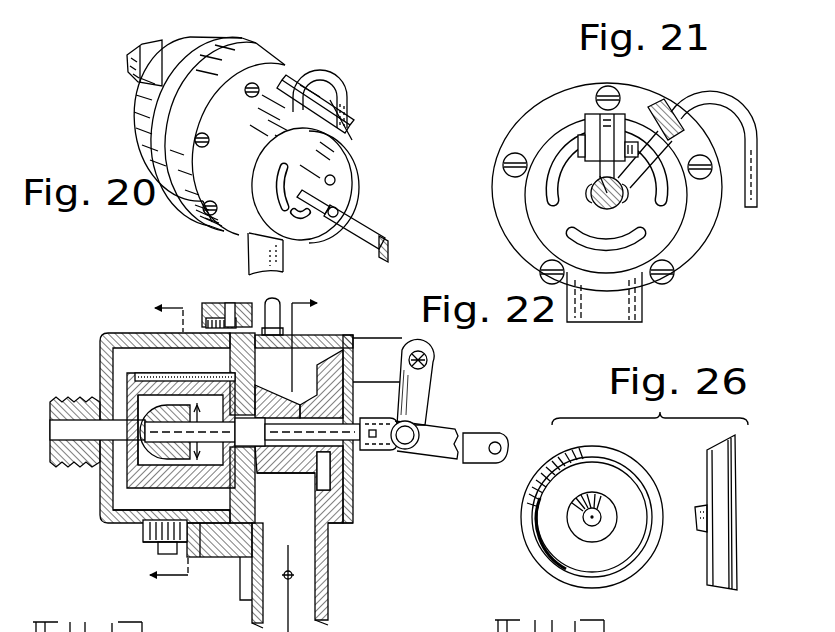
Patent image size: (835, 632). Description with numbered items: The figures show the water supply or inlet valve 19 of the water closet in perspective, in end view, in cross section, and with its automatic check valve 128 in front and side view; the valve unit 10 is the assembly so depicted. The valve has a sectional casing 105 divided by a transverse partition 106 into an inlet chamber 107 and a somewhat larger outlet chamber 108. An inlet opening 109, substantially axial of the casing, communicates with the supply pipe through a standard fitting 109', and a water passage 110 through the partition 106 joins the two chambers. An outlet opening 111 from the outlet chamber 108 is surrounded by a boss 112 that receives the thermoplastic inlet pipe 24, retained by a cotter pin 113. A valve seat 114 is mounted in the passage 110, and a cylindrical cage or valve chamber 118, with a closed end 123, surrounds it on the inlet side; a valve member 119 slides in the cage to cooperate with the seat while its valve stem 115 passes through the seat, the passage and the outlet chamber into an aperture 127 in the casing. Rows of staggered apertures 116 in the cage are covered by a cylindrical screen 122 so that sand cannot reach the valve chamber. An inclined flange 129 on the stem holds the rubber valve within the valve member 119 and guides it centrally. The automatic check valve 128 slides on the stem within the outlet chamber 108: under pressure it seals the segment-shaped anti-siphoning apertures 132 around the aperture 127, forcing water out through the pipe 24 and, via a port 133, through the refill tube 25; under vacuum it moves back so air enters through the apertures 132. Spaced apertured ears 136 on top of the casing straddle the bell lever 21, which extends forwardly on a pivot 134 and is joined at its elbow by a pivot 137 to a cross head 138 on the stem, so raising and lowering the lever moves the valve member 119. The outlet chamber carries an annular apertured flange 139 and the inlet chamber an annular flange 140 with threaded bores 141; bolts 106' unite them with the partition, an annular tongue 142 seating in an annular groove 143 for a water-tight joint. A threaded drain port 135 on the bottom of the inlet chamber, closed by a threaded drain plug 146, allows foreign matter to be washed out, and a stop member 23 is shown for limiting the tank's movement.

In FIG. 21, the valve unit 10 is at (660, 92).
In FIG. 20, the inlet valve 19 is at (284, 56).
In FIG. 21, the inlet valve 19 is at (512, 104).
In FIG. 22, the inlet valve 19 is at (131, 322).
In FIG. 20, the control lever 21 is at (382, 237).
In FIG. 21, the control lever 21 is at (617, 210).
In FIG. 22, the control lever 21 is at (485, 438).
In FIG. 22, the stop member 23 is at (172, 440).
In FIG. 20, the inlet pipe 24 is at (283, 262).
In FIG. 22, the inlet pipe 24 is at (342, 600).
In FIG. 20, the refill tube 25 is at (347, 95).
In FIG. 21, the refill tube 25 is at (735, 105).
In FIG. 22, the refill tube 25 is at (273, 297).
In FIG. 20, the sectional casing 105 is at (133, 108).
In FIG. 22, the sectional casing 105 is at (105, 340).
In FIG. 20, the transverse partition 106 is at (272, 129).
In FIG. 22, the transverse partition 106 is at (259, 428).
In FIG. 20, the bolts 106' is at (225, 167).
In FIG. 21, the bolts 106' is at (591, 196).
In FIG. 22, the inlet chamber 107 is at (120, 497).
In FIG. 22, the outlet chamber 108 is at (322, 350).
In FIG. 20, the inlet opening 109 is at (154, 50).
In FIG. 22, the inlet opening 109 is at (78, 423).
In FIG. 22, the standard fitting 109' is at (62, 420).
In FIG. 22, the water passage 110 is at (276, 410).
In FIG. 22, the outlet opening 111 is at (300, 520).
In FIG. 20, the boss 112 is at (294, 242).
In FIG. 22, the boss 112 is at (326, 570).
In FIG. 22, the cotter pin 113 is at (293, 575).
In FIG. 22, the valve seat 114 is at (282, 447).
In FIG. 20, the valve stem 115 is at (315, 175).
In FIG. 22, the valve stem 115 is at (290, 426).
In FIG. 22, the apertures 116 is at (158, 548).
In FIG. 22, the cage or valve chamber 118 is at (132, 462).
In FIG. 22, the valve member 119 is at (152, 403).
In FIG. 22, the cylindrical screen 122 is at (190, 374).
In FIG. 22, the closed end 123 is at (125, 395).
In FIG. 22, the aperture 127 is at (356, 418).
In FIG. 22, the automatic check valve 128 is at (332, 478).
In FIG. 26, the automatic check valve 128 is at (676, 485).
In FIG. 22, the inclined flange 129 is at (325, 388).
In FIG. 26, the inclined flange 129 is at (577, 522).
In FIG. 20, the anti-siphoning apertures 132 is at (300, 214).
In FIG. 21, the anti-siphoning apertures 132 is at (555, 198).
In FIG. 22, the anti-siphoning apertures 132 is at (352, 500).
In FIG. 22, the port 133 is at (353, 380).
In FIG. 20, the pivot 134 is at (339, 118).
In FIG. 21, the pivot 134 is at (583, 147).
In FIG. 22, the pivot 134 is at (427, 362).
In FIG. 22, the threaded drain port 135 is at (158, 520).
In FIG. 20, the apertured ears 136 is at (313, 168).
In FIG. 21, the apertured ears 136 is at (598, 132).
In FIG. 22, the apertured ears 136 is at (427, 380).
In FIG. 20, the pivot 137 is at (337, 215).
In FIG. 21, the pivot 137 is at (591, 190).
In FIG. 22, the pivot 137 is at (412, 430).
In FIG. 20, the cross head 138 is at (320, 203).
In FIG. 21, the cross head 138 is at (602, 207).
In FIG. 22, the cross head 138 is at (380, 450).
In FIG. 20, the annular apertured flange 139 is at (190, 207).
In FIG. 21, the annular apertured flange 139 is at (500, 200).
In FIG. 22, the annular apertured flange 139 is at (237, 560).
In FIG. 20, the annular flange 140 is at (157, 160).
In FIG. 22, the annular flange 140 is at (215, 300).
In FIG. 22, the threaded bores 141 is at (230, 305).
In FIG. 22, the annular tongue 142 is at (225, 540).
In FIG. 22, the annular groove 143 is at (212, 530).
In FIG. 22, the threaded drain plug 146 is at (170, 555).